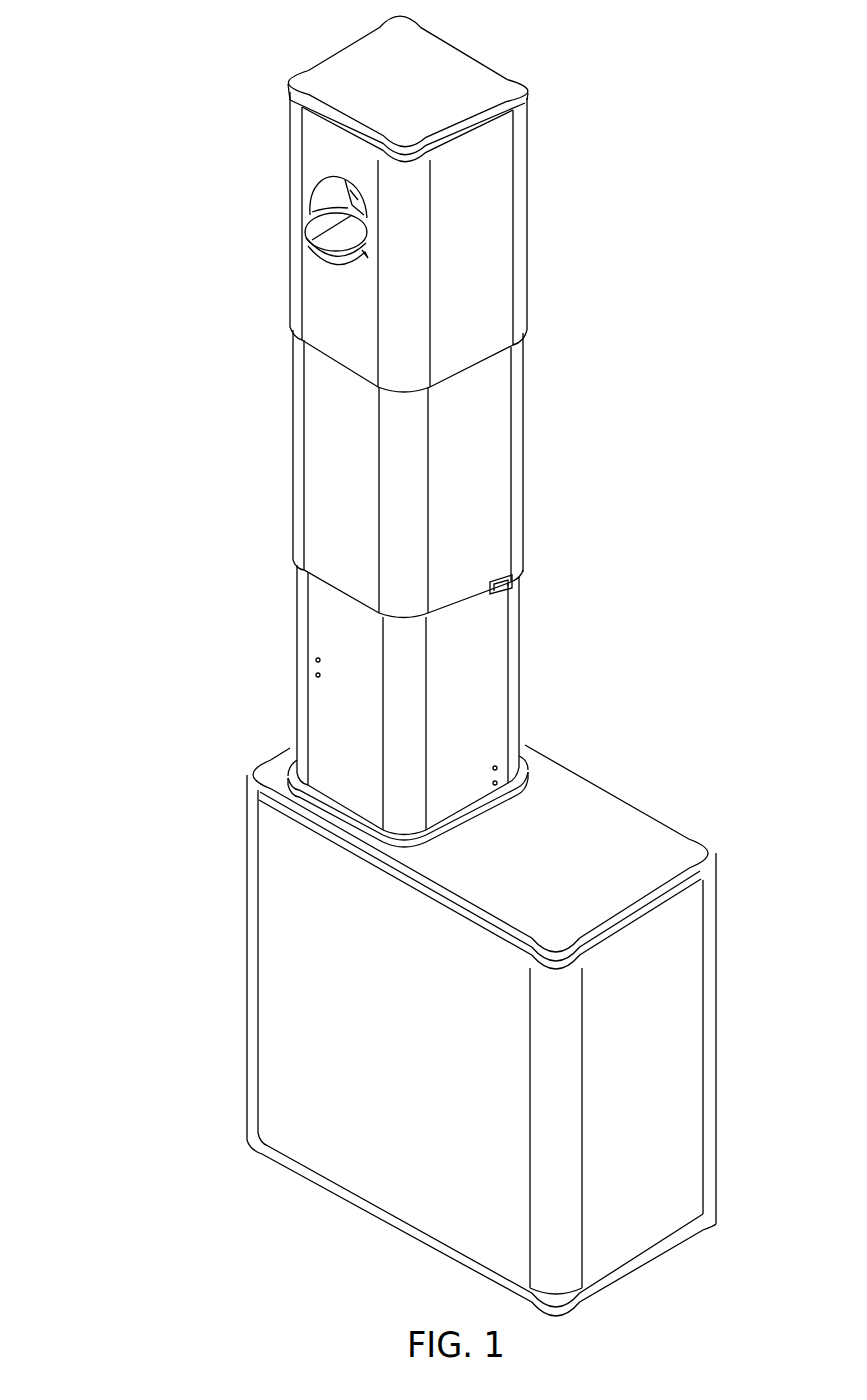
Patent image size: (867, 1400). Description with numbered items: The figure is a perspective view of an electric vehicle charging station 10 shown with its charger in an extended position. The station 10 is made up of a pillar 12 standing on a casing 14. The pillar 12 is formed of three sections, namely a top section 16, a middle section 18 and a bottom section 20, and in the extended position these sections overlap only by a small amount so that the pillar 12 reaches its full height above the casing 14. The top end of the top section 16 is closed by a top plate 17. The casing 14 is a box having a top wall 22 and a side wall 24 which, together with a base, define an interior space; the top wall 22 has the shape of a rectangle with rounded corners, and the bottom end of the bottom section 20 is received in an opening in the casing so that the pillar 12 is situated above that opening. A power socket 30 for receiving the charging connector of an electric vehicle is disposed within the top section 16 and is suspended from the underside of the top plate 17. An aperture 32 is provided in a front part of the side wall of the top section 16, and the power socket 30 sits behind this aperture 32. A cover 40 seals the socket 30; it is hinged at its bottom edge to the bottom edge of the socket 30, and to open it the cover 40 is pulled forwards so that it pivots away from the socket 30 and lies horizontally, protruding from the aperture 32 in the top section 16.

The electric vehicle charging station 10 is at (140, 68).
The pillar 12 is at (292, 500).
The casing 14 is at (315, 1135).
The top section 16 is at (486, 242).
The top plate 17 is at (448, 83).
The middle section 18 is at (493, 445).
The bottom section 20 is at (490, 662).
The top wall 22 is at (630, 830).
The side wall 24 is at (380, 1168).
The power socket 30 is at (305, 240).
The aperture 32 is at (325, 193).
The cover 40 is at (312, 252).